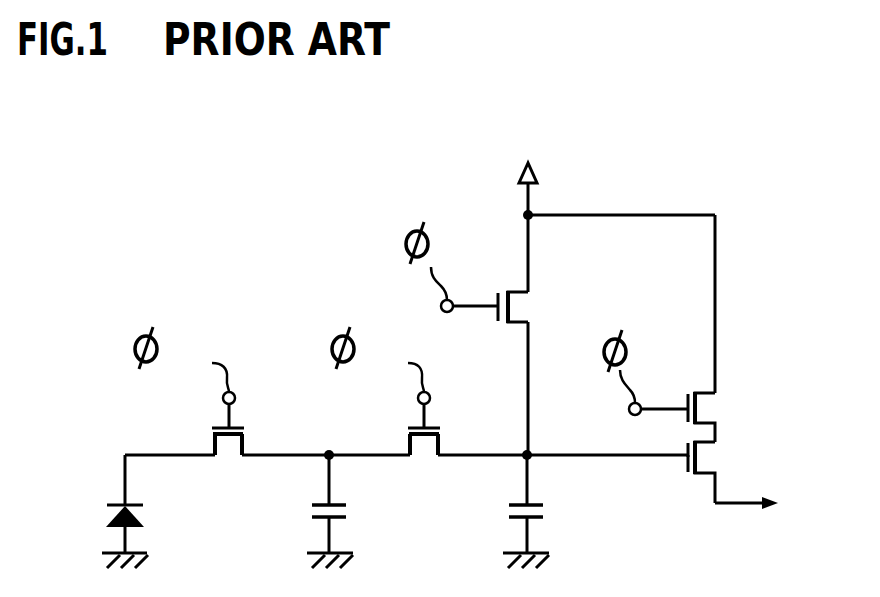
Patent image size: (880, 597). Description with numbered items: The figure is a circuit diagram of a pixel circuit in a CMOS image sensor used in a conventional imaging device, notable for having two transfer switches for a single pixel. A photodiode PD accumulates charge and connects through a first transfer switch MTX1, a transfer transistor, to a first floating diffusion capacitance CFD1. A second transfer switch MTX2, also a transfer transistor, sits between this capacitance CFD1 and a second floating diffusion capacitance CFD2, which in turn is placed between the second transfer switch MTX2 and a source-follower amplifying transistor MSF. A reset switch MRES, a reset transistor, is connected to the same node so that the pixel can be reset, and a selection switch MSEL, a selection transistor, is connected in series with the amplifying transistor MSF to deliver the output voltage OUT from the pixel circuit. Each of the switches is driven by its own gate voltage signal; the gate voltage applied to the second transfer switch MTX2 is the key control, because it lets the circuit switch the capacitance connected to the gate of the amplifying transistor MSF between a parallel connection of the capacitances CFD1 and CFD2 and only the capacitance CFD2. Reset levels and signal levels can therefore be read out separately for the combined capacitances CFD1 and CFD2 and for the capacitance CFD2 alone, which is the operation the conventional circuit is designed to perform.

The photodiode PD is at (102, 511).
The first transfer switch MTX1 is at (228, 445).
The second transfer switch MTX2 is at (421, 445).
The floating diffusion capacitance CFD1 is at (299, 511).
The floating diffusion capacitance CFD2 is at (493, 511).
The reset switch MRES is at (527, 308).
The selection switch MSEL is at (719, 417).
The source-follower amplifying transistor MSF is at (732, 472).
The output voltage OUT is at (776, 504).